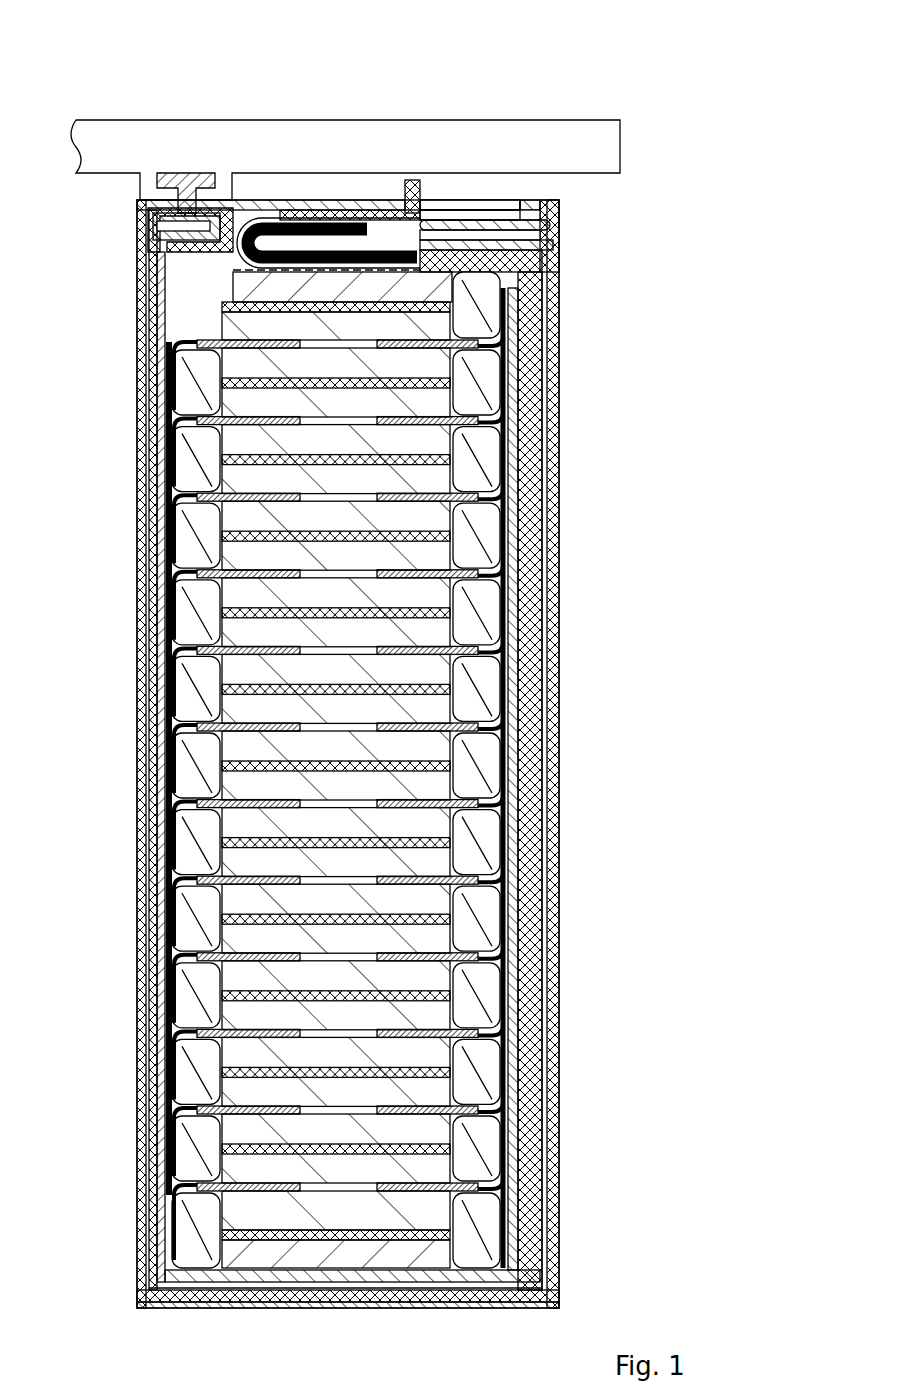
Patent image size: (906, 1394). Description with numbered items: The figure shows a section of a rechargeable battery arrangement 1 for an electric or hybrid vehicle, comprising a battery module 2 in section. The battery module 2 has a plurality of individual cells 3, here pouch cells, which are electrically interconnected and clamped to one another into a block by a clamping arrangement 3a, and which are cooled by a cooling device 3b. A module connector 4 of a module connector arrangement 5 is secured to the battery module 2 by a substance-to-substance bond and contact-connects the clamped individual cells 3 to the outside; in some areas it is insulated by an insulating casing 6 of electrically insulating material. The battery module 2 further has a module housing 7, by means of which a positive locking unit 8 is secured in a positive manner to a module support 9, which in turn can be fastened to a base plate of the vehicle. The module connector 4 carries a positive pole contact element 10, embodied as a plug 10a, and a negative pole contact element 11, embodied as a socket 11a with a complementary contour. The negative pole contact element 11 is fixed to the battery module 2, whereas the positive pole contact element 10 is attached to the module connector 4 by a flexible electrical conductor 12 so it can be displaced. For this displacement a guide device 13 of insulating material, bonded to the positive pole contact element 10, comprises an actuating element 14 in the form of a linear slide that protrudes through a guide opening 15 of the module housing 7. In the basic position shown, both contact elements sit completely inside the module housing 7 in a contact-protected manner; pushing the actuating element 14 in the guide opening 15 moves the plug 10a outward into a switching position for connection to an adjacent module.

The rechargeable battery arrangement 1 is at (708, 145).
The battery module 2 is at (660, 332).
The individual cells 3 is at (328, 356).
The clamping arrangement 3a is at (233, 284).
The cooling device 3b is at (168, 381).
The module connector 4 is at (541, 423).
The module connector arrangement 5 is at (585, 208).
The insulating casing 6 is at (560, 518).
The module housing 7 is at (560, 470).
The positive locking unit 8 is at (184, 175).
The module support 9 is at (352, 133).
The positive pole contact element 10 is at (560, 224).
The plug 10a is at (528, 230).
The negative pole contact element 11 is at (152, 226).
The socket 11a is at (155, 240).
The flexible electrical conductor 12 is at (246, 220).
The guide device 13 is at (428, 207).
The actuating element 14 is at (412, 180).
The guide opening 15 is at (477, 202).